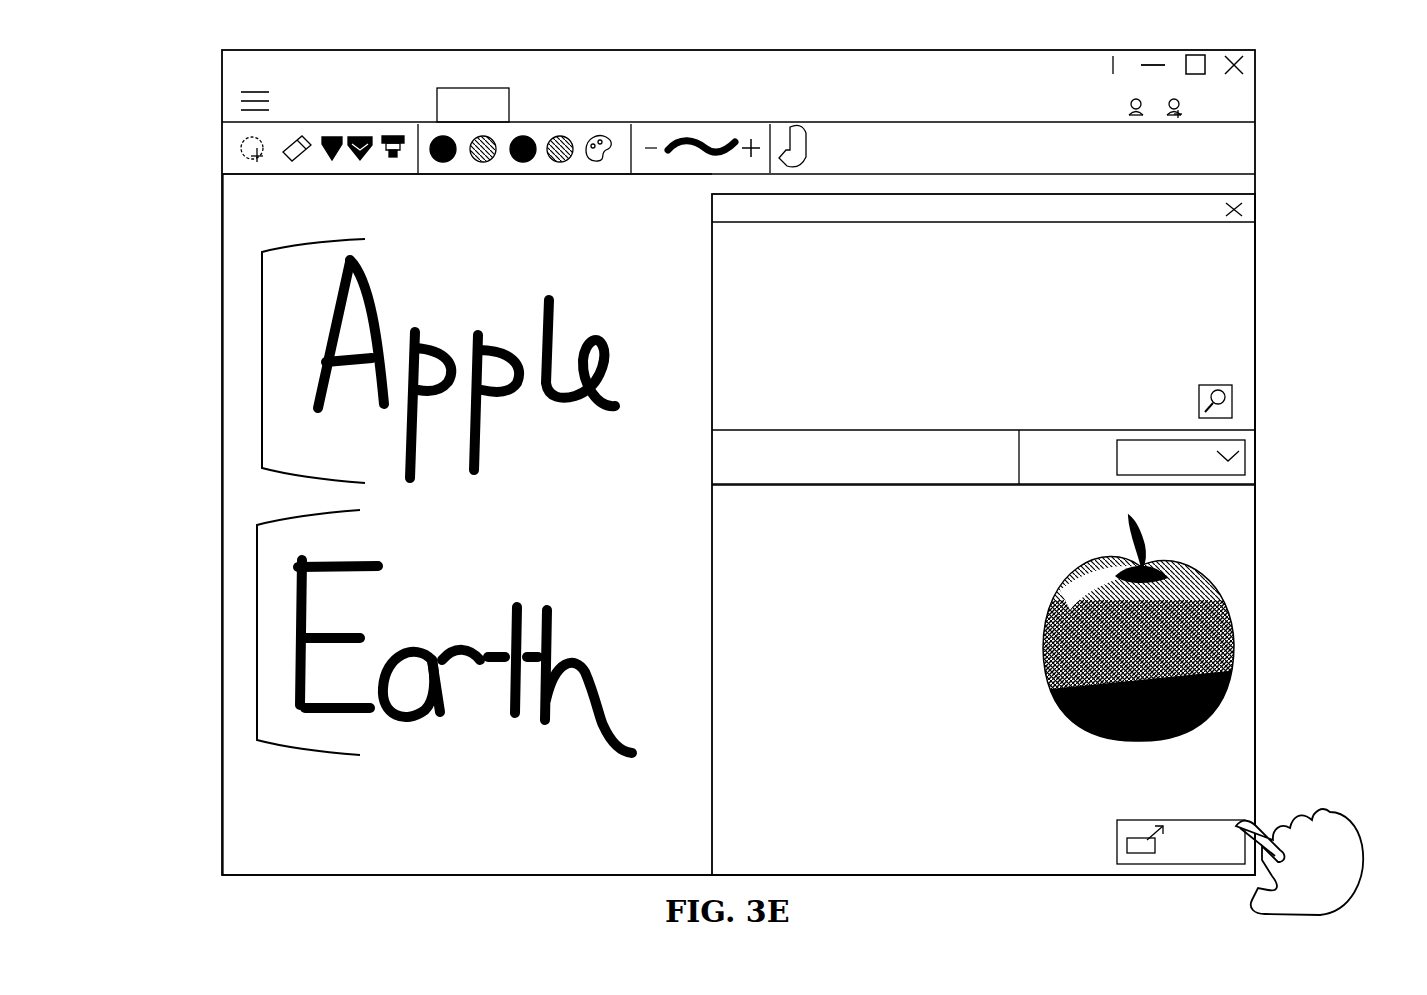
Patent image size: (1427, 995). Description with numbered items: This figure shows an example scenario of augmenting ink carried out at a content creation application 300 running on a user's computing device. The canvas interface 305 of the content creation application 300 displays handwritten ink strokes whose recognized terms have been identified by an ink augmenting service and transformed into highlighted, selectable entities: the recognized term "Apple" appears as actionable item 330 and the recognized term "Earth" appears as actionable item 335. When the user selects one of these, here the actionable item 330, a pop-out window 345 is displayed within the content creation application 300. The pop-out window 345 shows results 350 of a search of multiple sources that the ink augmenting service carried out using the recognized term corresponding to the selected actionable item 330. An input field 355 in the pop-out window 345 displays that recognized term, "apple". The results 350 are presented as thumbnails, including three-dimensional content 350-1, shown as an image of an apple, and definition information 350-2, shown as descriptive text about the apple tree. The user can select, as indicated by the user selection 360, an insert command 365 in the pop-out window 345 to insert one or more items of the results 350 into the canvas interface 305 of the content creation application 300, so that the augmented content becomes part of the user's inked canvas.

The content creation application 300 is at (1020, 50).
The canvas interface 305 is at (467, 524).
The actionable item 330 is at (262, 369).
The actionable item 335 is at (257, 640).
The pop-out window 345 is at (1057, 195).
The results 350 is at (1260, 484).
The 3D content 350-1 is at (1182, 555).
The definition information 350-2 is at (783, 521).
The input field 355 is at (797, 430).
The user selection 360 is at (1299, 862).
The insert command 365 is at (1137, 820).